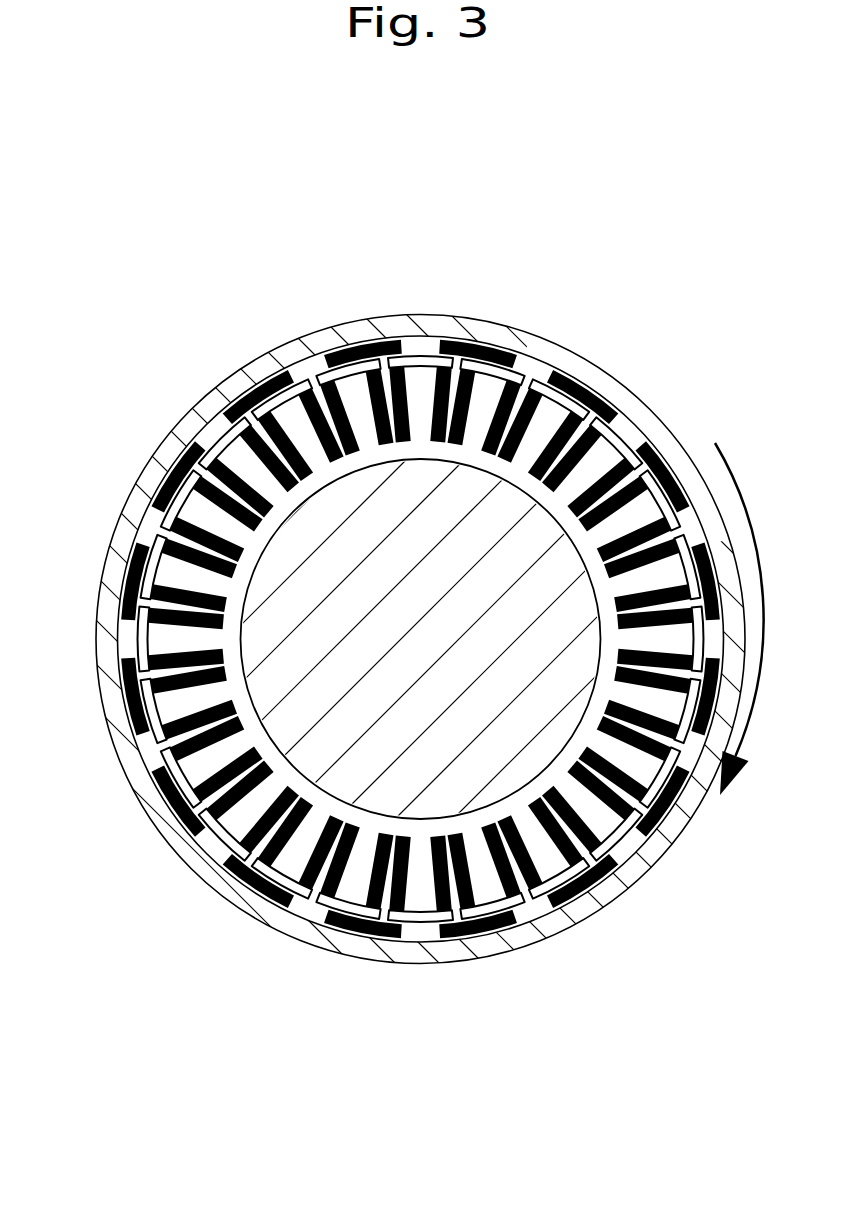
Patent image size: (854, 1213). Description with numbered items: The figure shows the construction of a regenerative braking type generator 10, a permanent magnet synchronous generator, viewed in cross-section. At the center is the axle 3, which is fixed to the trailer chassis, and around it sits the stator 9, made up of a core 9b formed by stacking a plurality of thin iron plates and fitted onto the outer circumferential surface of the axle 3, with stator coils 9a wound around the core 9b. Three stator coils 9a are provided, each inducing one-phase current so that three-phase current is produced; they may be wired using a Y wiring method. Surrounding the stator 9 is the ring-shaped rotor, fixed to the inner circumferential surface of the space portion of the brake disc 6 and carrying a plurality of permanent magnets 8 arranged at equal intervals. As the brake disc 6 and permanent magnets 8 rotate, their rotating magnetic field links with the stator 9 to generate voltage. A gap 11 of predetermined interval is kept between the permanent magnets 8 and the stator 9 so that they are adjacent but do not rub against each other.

The axle 3 is at (537, 762).
The brake disc 6 is at (162, 475).
The permanent magnets 8 is at (250, 392).
The stator 9 is at (313, 890).
The stator coil 9a is at (367, 403).
The core 9b is at (421, 380).
The regenerative braking type generator 10 is at (138, 281).
The gap 11 is at (554, 381).